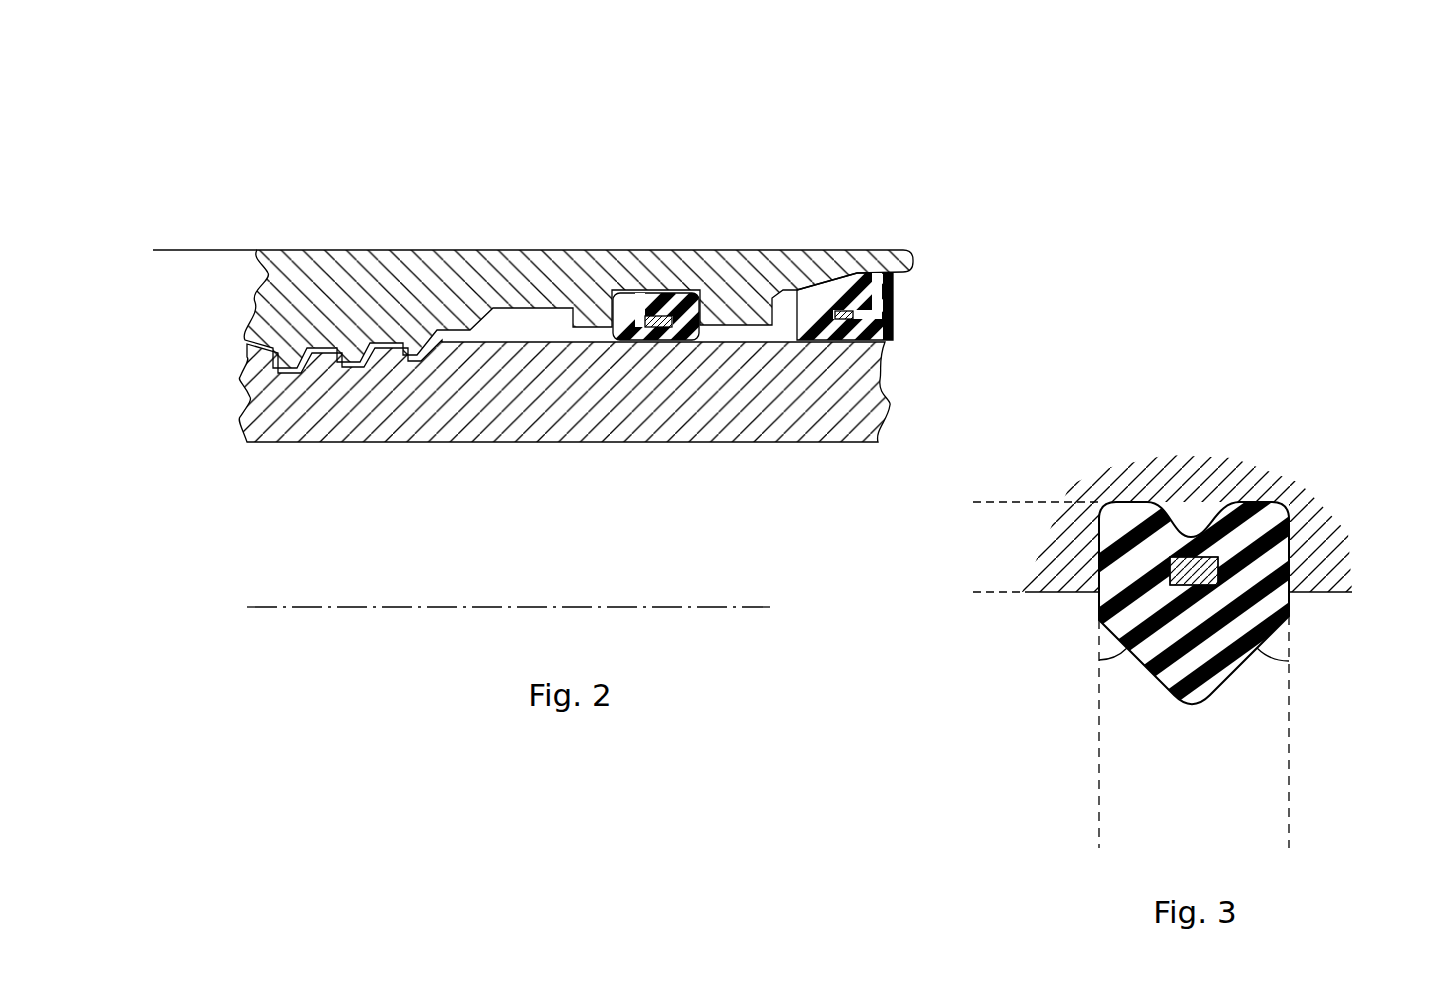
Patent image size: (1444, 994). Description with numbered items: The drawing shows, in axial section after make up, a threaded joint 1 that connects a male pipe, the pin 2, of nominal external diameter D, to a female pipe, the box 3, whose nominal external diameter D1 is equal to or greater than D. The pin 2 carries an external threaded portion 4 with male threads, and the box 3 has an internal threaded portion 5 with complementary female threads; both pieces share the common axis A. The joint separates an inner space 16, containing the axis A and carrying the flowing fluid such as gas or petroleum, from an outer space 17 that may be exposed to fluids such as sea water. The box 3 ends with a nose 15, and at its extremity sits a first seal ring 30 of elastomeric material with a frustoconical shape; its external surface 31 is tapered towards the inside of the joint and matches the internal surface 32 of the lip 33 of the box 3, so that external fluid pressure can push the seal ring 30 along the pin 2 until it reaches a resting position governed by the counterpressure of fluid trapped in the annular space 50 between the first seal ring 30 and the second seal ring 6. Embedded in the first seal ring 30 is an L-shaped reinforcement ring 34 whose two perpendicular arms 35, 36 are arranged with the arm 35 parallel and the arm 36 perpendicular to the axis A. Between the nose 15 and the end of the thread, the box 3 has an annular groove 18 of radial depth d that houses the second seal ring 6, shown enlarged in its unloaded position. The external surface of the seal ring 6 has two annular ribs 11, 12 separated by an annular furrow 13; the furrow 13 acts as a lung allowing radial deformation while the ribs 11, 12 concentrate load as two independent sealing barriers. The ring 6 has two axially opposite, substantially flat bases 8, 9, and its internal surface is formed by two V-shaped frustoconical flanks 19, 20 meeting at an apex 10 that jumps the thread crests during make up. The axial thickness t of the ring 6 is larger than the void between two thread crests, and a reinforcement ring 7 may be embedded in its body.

In FIG. 2, the threaded joint 1 is at (280, 207).
In FIG. 2, the pin 2 is at (555, 423).
In FIG. 2, the box 3 is at (400, 270).
In FIG. 3, the box 3 is at (1300, 487).
In FIG. 2, the external threaded portion 4 is at (388, 350).
In FIG. 2, the internal threaded portion 5 is at (244, 343).
In FIG. 2, the second seal ring 6 is at (641, 293).
In FIG. 3, the second seal ring 6 is at (1290, 537).
In FIG. 3, the reinforcement ring 7 is at (1253, 570).
In FIG. 3, the base 8 is at (1098, 617).
In FIG. 3, the base 9 is at (1290, 613).
In FIG. 3, the seal ring apex 10 is at (1197, 702).
In FIG. 3, the annular rib 11 is at (1133, 502).
In FIG. 3, the annular rib 12 is at (1258, 503).
In FIG. 3, the annular furrow 13 is at (1193, 537).
In FIG. 2, the nose 15 is at (907, 263).
In FIG. 2, the inner space 16 is at (592, 564).
In FIG. 2, the outer space 17 is at (550, 146).
In FIG. 2, the annular groove 18 is at (672, 315).
In FIG. 3, the annular groove 18 is at (1173, 556).
In FIG. 3, the frustoconical surface 19 is at (1152, 672).
In FIG. 3, the frustoconical surface 20 is at (1238, 675).
In FIG. 2, the first seal ring 30 is at (870, 333).
In FIG. 2, the external surface 31 is at (842, 280).
In FIG. 2, the internal surface 32 is at (780, 296).
In FIG. 2, the lip 33 is at (873, 286).
In FIG. 2, the reinforcement ring 34 is at (870, 310).
In FIG. 2, the arm 35 is at (853, 341).
In FIG. 2, the arm 36 is at (887, 270).
In FIG. 2, the annular space 50 is at (748, 322).
In FIG. 2, the common axis A is at (265, 607).
In FIG. 2, the nominal external diameter D is at (893, 340).
In FIG. 2, the nominal external diameter D1 is at (157, 270).
In FIG. 3, the groove depth d is at (978, 520).
In FIG. 3, the thickness t is at (1119, 819).